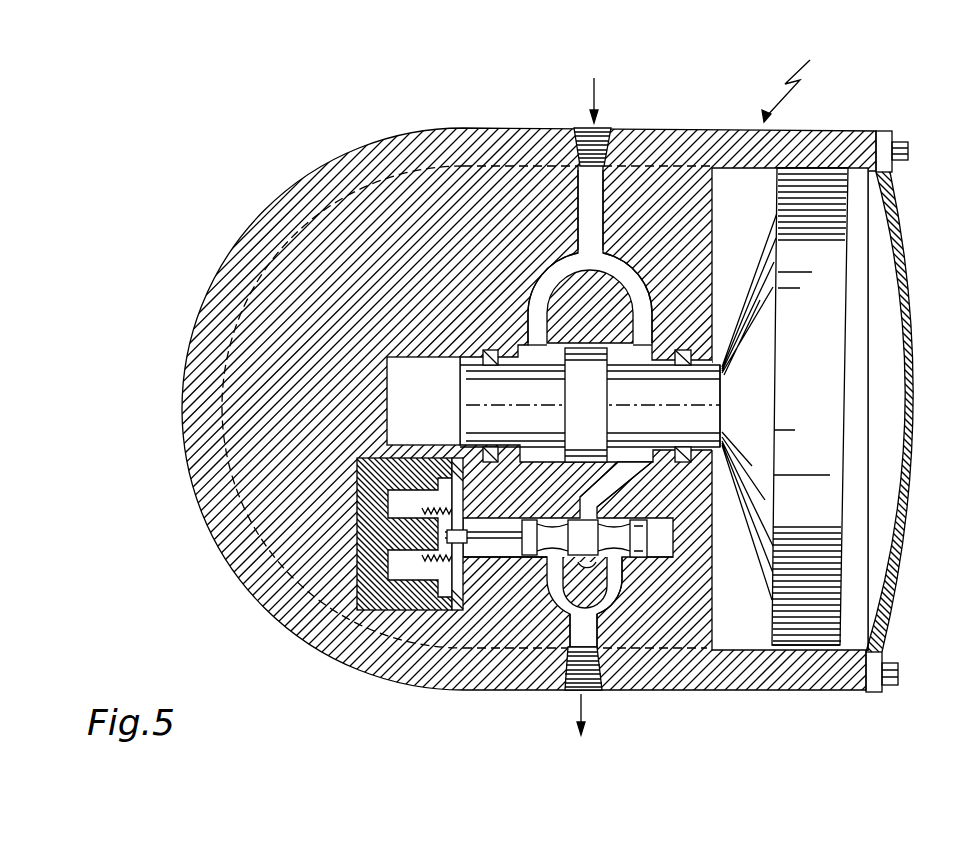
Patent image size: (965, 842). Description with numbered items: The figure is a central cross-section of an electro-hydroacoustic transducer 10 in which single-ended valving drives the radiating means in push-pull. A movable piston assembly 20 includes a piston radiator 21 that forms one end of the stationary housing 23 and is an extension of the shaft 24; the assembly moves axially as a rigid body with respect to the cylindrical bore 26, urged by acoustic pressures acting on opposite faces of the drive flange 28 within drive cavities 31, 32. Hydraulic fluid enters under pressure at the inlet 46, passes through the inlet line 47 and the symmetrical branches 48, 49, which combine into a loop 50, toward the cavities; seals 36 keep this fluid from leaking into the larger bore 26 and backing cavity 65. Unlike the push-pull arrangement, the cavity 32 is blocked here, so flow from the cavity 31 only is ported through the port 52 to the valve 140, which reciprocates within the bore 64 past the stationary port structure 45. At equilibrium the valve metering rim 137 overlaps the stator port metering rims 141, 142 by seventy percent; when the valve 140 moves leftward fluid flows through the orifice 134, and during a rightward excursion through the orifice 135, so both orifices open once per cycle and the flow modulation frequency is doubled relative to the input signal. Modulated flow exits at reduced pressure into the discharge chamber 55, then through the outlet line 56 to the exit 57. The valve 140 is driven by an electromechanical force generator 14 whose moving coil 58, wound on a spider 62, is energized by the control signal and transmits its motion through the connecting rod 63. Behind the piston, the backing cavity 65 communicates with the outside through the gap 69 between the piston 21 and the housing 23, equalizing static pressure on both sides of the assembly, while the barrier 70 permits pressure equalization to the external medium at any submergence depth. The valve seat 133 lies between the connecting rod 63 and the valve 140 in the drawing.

The transducer 10 is at (798, 88).
The electromechanical force generator 14 is at (412, 480).
The movable piston assembly 20 is at (718, 352).
The piston radiator 21 is at (842, 306).
The stationary housing 23 is at (823, 131).
The shaft 24 is at (705, 372).
The cylindrical bore 26 is at (432, 406).
The drive flange 28 is at (596, 407).
The drive cavity 31 is at (646, 359).
The drive cavity 32 is at (552, 359).
The seals 36 is at (488, 352).
The stationary port structure 45 is at (637, 557).
The inlet 46 is at (600, 128).
The inlet line 47 is at (601, 204).
The branch 48 is at (625, 272).
The branch 49 is at (553, 280).
The loop 50 is at (591, 280).
The port 52 is at (615, 478).
The discharge chamber 55 is at (593, 631).
The outlet line 56 is at (578, 645).
The exit 57 is at (590, 690).
The moving coil 58 is at (422, 562).
The spider 62 is at (464, 523).
The connecting rod 63 is at (472, 539).
The bore 64 is at (670, 540).
The backing cavity 65 is at (748, 221).
The gap 69 is at (843, 172).
The barrier 70 is at (906, 257).
The valve seat 133 is at (545, 518).
The orifice 134 is at (618, 565).
The orifice 135 is at (505, 570).
The valve metering rim 137 is at (625, 508).
The valve 140 is at (583, 537).
The stator port metering rim 141 is at (597, 574).
The stator port metering rim 142 is at (482, 408).